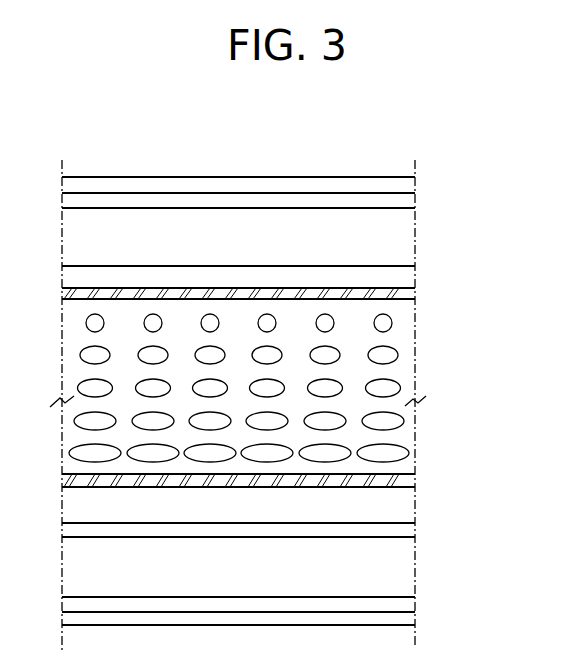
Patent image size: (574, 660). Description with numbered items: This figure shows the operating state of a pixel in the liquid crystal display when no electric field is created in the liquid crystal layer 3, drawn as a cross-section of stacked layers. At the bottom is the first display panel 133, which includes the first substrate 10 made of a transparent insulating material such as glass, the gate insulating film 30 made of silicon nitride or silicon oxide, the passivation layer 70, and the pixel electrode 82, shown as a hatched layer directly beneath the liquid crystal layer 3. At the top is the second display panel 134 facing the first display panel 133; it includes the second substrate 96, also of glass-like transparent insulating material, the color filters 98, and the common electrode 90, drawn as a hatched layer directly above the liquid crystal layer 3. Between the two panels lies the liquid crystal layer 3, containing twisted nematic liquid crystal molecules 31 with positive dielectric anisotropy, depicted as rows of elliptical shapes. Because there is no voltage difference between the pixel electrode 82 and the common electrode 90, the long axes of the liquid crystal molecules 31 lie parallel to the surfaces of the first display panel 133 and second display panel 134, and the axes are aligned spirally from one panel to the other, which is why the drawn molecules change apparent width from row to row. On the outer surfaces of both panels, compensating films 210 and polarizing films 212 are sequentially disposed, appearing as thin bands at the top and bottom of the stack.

The polarizing film 212 is at (405, 183).
The compensating film 210 is at (405, 202).
The second substrate 96 is at (405, 239).
The color filter 98 is at (405, 274).
The common electrode 90 is at (405, 294).
The second display panel 134 is at (467, 237).
The liquid crystal layer 3 is at (270, 386).
The liquid crystal molecules 31 is at (421, 473).
The pixel electrode 82 is at (405, 482).
The passivation layer 70 is at (405, 507).
The gate insulating film 30 is at (405, 531).
The first substrate 10 is at (405, 569).
The first display panel 133 is at (470, 482).